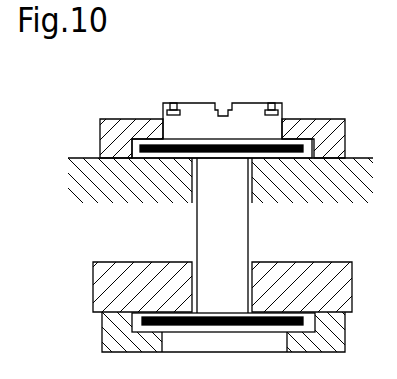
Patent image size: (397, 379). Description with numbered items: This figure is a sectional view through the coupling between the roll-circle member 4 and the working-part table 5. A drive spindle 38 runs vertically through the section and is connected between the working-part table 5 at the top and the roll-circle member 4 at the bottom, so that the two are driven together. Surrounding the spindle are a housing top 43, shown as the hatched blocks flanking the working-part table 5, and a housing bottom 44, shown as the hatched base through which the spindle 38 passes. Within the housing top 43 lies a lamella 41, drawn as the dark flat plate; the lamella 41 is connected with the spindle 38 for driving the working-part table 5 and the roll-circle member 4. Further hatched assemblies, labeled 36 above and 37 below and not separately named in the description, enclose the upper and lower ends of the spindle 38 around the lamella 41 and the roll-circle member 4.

The roll-circle member 4 is at (100, 287).
The working-part table 5 is at (241, 117).
The upper bearing assembly 36 is at (126, 106).
The lower bearing assembly 37 is at (133, 251).
The drive spindle 38 is at (240, 235).
The lamella 41 is at (147, 146).
The housing top 43 is at (107, 138).
The housing bottom 44 is at (80, 180).